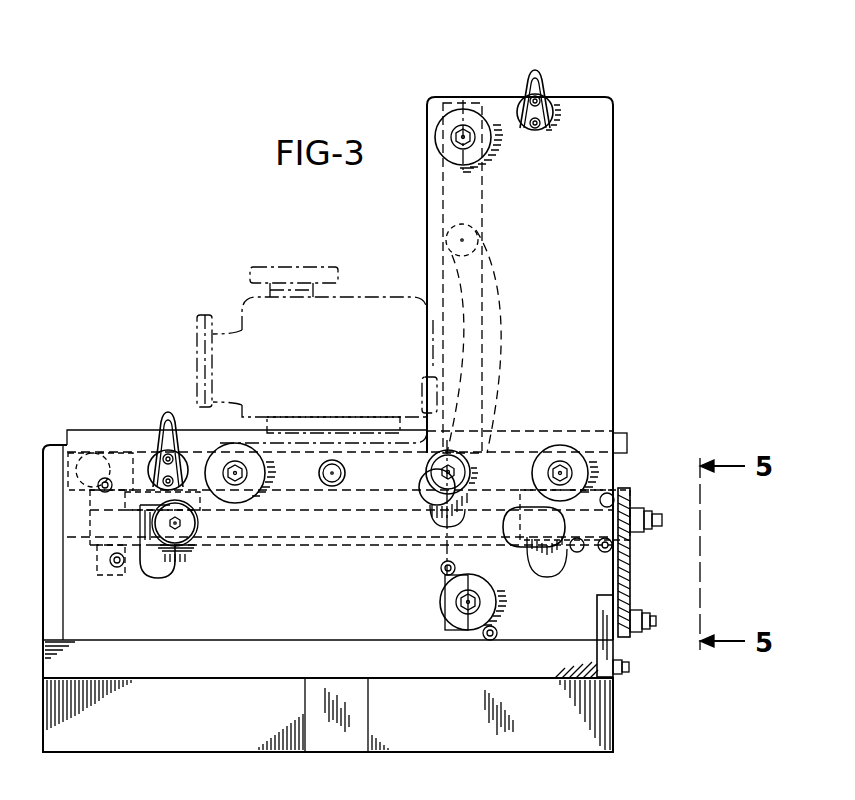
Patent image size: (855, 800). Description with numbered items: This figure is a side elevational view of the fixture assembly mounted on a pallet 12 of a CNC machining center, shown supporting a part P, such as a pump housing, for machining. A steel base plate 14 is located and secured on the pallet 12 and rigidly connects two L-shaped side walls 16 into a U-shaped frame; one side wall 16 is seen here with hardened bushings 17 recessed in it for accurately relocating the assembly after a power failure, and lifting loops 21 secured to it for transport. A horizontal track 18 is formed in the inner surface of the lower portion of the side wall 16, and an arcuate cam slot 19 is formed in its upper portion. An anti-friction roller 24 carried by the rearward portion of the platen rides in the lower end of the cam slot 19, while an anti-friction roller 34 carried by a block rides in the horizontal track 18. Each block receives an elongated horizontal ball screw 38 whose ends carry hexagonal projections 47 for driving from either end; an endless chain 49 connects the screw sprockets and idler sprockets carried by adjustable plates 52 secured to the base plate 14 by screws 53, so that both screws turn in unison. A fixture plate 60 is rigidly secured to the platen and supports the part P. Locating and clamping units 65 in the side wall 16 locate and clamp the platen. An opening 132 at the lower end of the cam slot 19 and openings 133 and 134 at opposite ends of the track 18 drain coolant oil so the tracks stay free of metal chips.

The pallet 12 is at (244, 749).
The base plate 14 is at (243, 650).
The side wall 16 is at (603, 276).
The hardened bushing 17 is at (332, 460).
The horizontal track 18 is at (334, 547).
The arcuate cam slot 19 is at (502, 286).
The lifting loop 21 is at (522, 80).
The anti-friction roller 24 is at (440, 218).
The anti-friction roller 34 is at (192, 546).
The ball screw 38 is at (276, 546).
The hexagonal projection 47 is at (653, 514).
The endless chain 49 is at (630, 576).
The adjustable plate 52 is at (598, 650).
The screw 53 is at (630, 665).
The fixture plate 60 is at (100, 430).
The locating and clamping unit 65 is at (440, 116).
The opening 132 is at (430, 498).
The opening 133 is at (158, 578).
The opening 134 is at (550, 578).
The part P is at (233, 308).